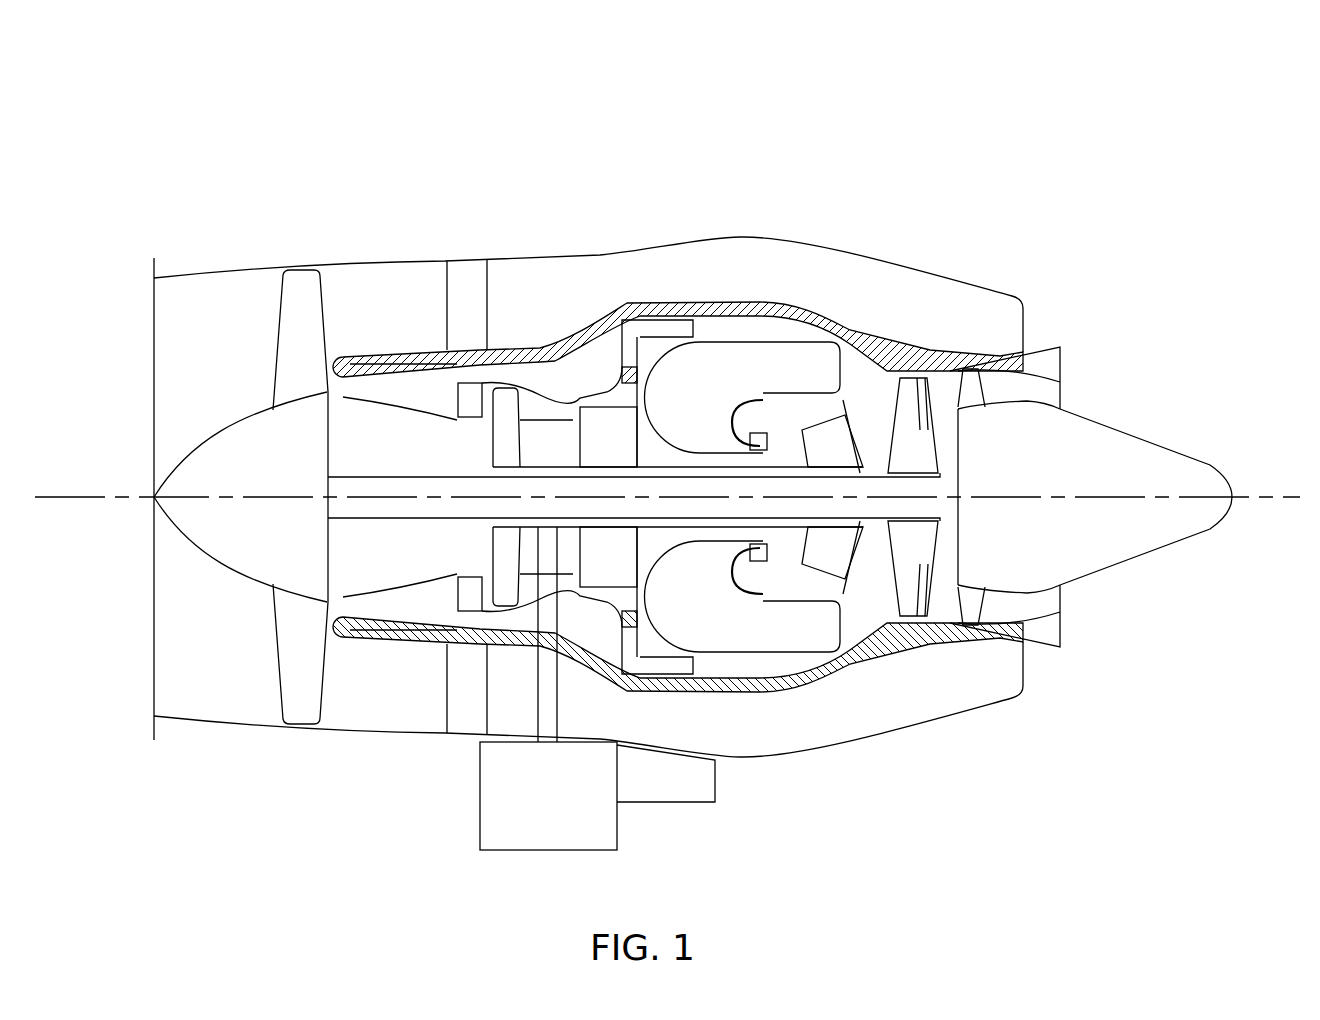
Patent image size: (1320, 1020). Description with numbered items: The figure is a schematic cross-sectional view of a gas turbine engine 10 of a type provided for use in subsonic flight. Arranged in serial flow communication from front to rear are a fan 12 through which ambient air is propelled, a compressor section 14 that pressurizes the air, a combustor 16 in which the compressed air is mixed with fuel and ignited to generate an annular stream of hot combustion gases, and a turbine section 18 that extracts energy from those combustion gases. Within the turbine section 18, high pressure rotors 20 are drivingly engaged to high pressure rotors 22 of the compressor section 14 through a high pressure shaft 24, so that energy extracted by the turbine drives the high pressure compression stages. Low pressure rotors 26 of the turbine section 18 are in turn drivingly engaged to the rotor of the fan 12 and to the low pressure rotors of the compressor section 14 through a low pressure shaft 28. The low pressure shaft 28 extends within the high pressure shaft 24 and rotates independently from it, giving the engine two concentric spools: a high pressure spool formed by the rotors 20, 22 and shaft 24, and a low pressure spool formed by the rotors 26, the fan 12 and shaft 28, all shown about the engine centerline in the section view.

The gas turbine engine 10 is at (905, 168).
The fan 12 is at (297, 643).
The compressor section 14 is at (540, 400).
The combustor 16 is at (747, 363).
The turbine section 18 is at (877, 560).
The high pressure rotor 20 is at (843, 430).
The high pressure rotor 22 is at (607, 427).
The high pressure shaft 24 is at (755, 420).
The low pressure rotor 26 is at (857, 437).
The low pressure shaft 28 is at (388, 520).